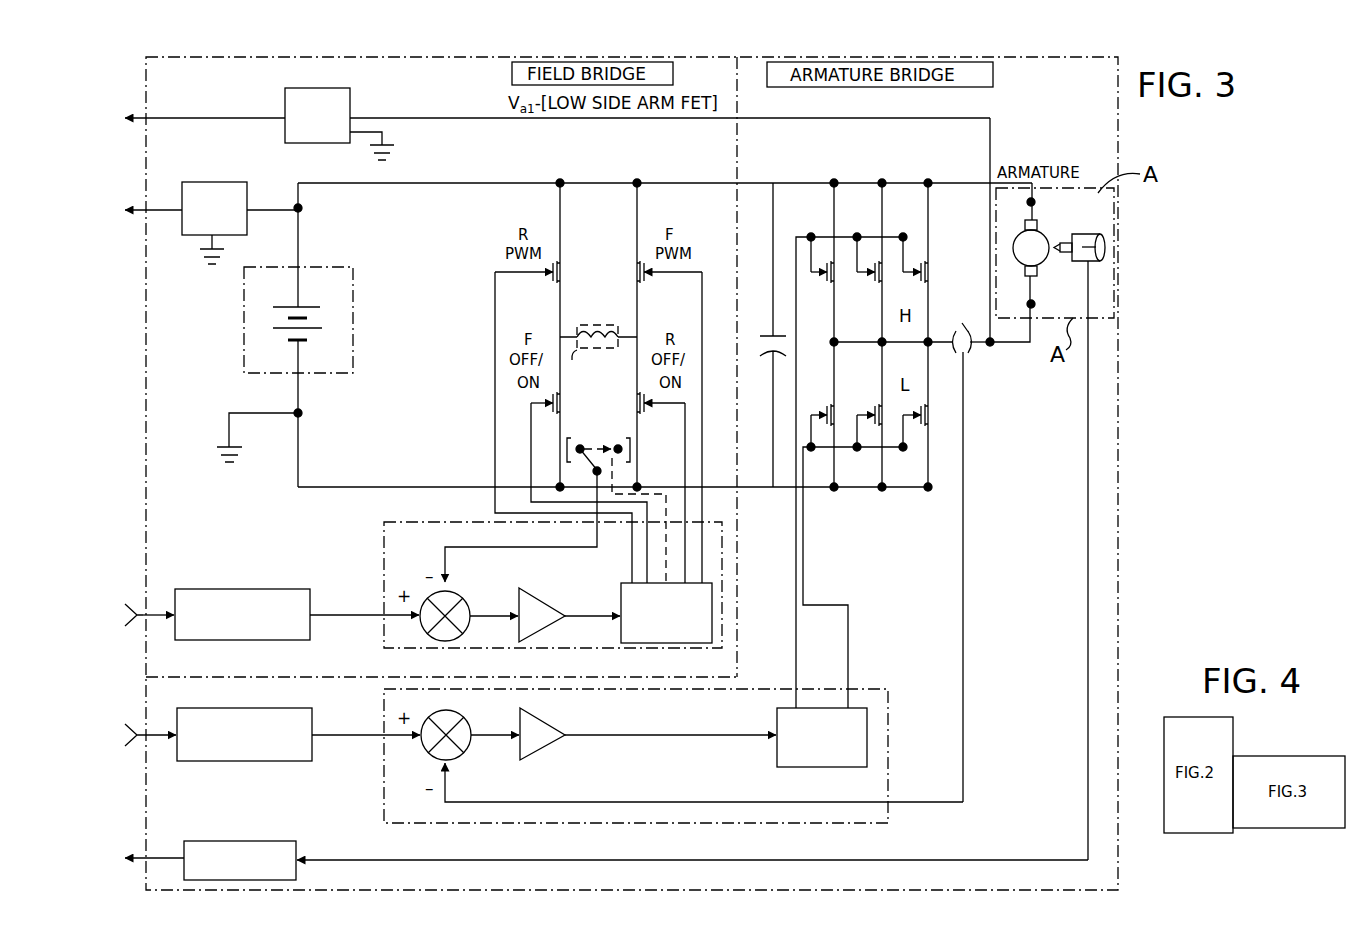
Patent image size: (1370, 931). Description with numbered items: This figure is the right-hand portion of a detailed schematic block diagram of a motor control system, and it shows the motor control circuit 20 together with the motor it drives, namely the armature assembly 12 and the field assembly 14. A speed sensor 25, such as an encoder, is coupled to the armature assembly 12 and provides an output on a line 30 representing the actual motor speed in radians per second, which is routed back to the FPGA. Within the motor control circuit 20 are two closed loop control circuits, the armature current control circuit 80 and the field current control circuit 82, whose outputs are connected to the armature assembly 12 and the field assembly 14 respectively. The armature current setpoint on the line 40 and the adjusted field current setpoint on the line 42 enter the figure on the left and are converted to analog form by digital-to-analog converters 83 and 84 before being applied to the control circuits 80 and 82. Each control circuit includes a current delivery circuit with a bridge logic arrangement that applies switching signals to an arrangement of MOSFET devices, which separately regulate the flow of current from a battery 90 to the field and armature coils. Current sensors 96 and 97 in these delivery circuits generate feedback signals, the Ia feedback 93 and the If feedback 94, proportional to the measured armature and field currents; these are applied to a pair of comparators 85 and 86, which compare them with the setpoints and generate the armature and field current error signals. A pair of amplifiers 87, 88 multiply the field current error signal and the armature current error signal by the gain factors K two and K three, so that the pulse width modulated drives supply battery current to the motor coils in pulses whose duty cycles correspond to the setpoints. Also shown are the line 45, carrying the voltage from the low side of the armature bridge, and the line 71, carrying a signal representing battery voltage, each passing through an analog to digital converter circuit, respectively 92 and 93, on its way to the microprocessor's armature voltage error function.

The armature assembly 12 is at (1046, 262).
The field assembly 14 is at (617, 325).
The motor control circuit 20 is at (146, 80).
The speed sensor 25 is at (1103, 247).
The line 30 is at (155, 858).
The line 40 is at (137, 724).
The line 42 is at (137, 603).
The line 45 is at (205, 118).
The line 71 is at (167, 212).
The armature current control circuit 80 is at (383, 777).
The field current control circuit 82 is at (382, 543).
The digital-to-analog converter 83 is at (313, 720).
The digital-to-analog converter 84 is at (310, 628).
The comparator 85 is at (452, 712).
The comparator 86 is at (462, 594).
The amplifier 87 is at (523, 587).
The amplifier 88 is at (552, 747).
The battery 90 is at (243, 318).
The analog to digital converter circuit 92 is at (350, 100).
The analog to digital converter circuit 93 is at (215, 182).
The If feedback 94 is at (598, 530).
The current sensor 96 is at (969, 352).
The current sensor 97 is at (602, 448).